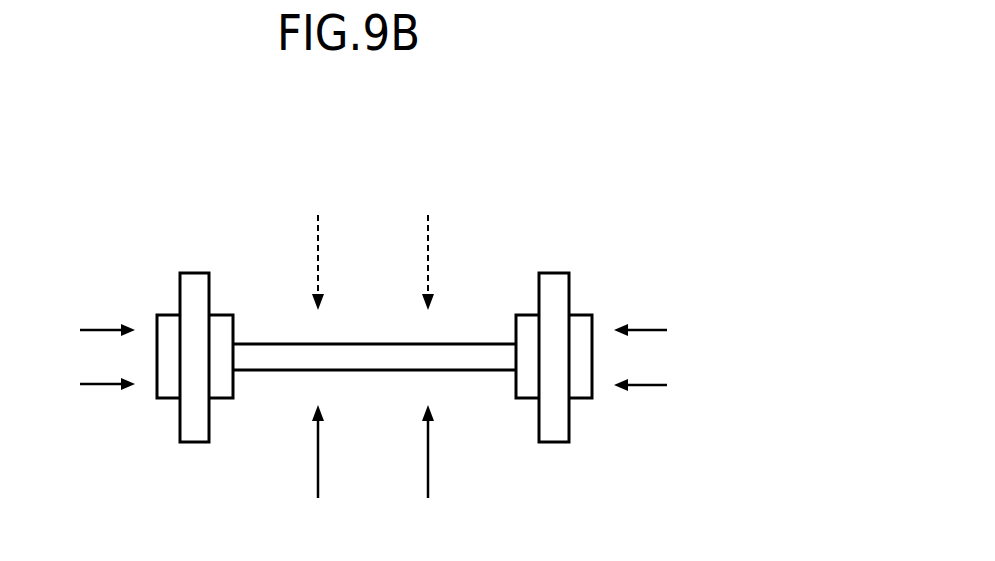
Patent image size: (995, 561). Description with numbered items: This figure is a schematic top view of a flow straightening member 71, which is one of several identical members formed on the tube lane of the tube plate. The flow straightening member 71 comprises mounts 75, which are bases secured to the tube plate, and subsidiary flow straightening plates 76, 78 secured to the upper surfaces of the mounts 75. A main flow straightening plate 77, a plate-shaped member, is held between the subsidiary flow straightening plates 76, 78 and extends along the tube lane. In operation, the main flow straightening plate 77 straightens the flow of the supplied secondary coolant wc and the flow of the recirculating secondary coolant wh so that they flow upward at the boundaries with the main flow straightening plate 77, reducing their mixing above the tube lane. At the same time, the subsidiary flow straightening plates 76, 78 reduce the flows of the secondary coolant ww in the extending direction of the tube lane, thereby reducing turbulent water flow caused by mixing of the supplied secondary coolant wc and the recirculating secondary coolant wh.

The flow straightening member 71 is at (563, 173).
The mounts 75 is at (167, 388).
The subsidiary flow straightening plate 76 is at (194, 281).
The main flow straightening plate 77 is at (378, 367).
The subsidiary flow straightening plate 78 is at (551, 281).
The secondary coolant ww is at (96, 328).
The supplied secondary coolant wc is at (319, 243).
The recirculating secondary coolant wh is at (319, 465).